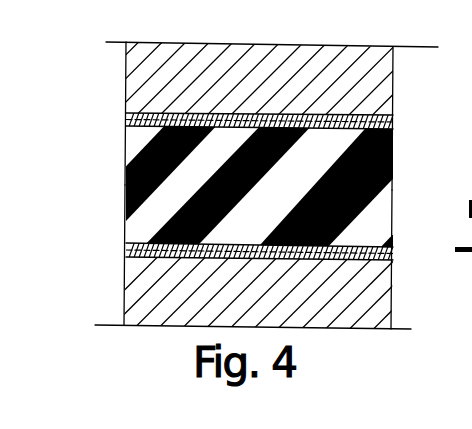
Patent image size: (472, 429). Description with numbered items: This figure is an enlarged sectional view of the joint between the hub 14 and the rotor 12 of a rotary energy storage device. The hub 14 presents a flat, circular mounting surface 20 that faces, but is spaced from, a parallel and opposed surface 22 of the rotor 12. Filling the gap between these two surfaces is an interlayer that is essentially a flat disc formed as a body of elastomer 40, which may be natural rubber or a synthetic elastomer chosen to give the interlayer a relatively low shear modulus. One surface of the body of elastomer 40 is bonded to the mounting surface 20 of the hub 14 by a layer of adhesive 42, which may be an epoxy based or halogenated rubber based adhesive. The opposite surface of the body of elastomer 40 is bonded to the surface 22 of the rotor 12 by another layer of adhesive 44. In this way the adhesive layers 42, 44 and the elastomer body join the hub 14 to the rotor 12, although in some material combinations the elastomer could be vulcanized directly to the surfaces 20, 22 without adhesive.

The rotor element 12 is at (113, 296).
The hub 14 is at (115, 66).
The mounting surface 20 is at (141, 113).
The opposed surface 22 is at (157, 258).
The body of elastomer 40 is at (133, 147).
The layer of adhesive 42 is at (127, 118).
The layer of adhesive 44 is at (125, 251).